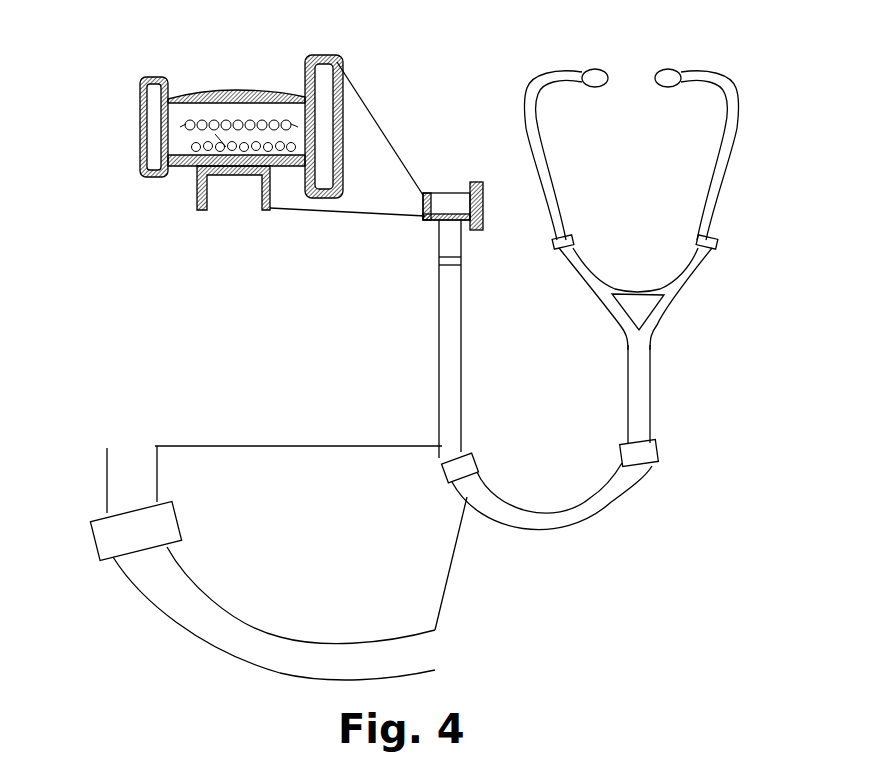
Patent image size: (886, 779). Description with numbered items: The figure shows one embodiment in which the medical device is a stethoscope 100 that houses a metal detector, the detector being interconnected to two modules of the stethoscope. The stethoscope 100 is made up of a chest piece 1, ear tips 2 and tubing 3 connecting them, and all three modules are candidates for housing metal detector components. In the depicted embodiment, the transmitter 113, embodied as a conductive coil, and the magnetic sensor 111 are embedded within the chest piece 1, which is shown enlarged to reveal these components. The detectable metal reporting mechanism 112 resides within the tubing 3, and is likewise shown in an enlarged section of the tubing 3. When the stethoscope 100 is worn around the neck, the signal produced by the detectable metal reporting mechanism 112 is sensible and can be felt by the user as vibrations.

The chest piece 1 is at (444, 208).
The ear tips 2 is at (600, 73).
The tubing 3 is at (617, 488).
The stethoscope 100 is at (742, 314).
The magnetic sensor 111 is at (256, 119).
The detectable metal reporting mechanism 112 is at (183, 610).
The transmitter 113 is at (195, 148).